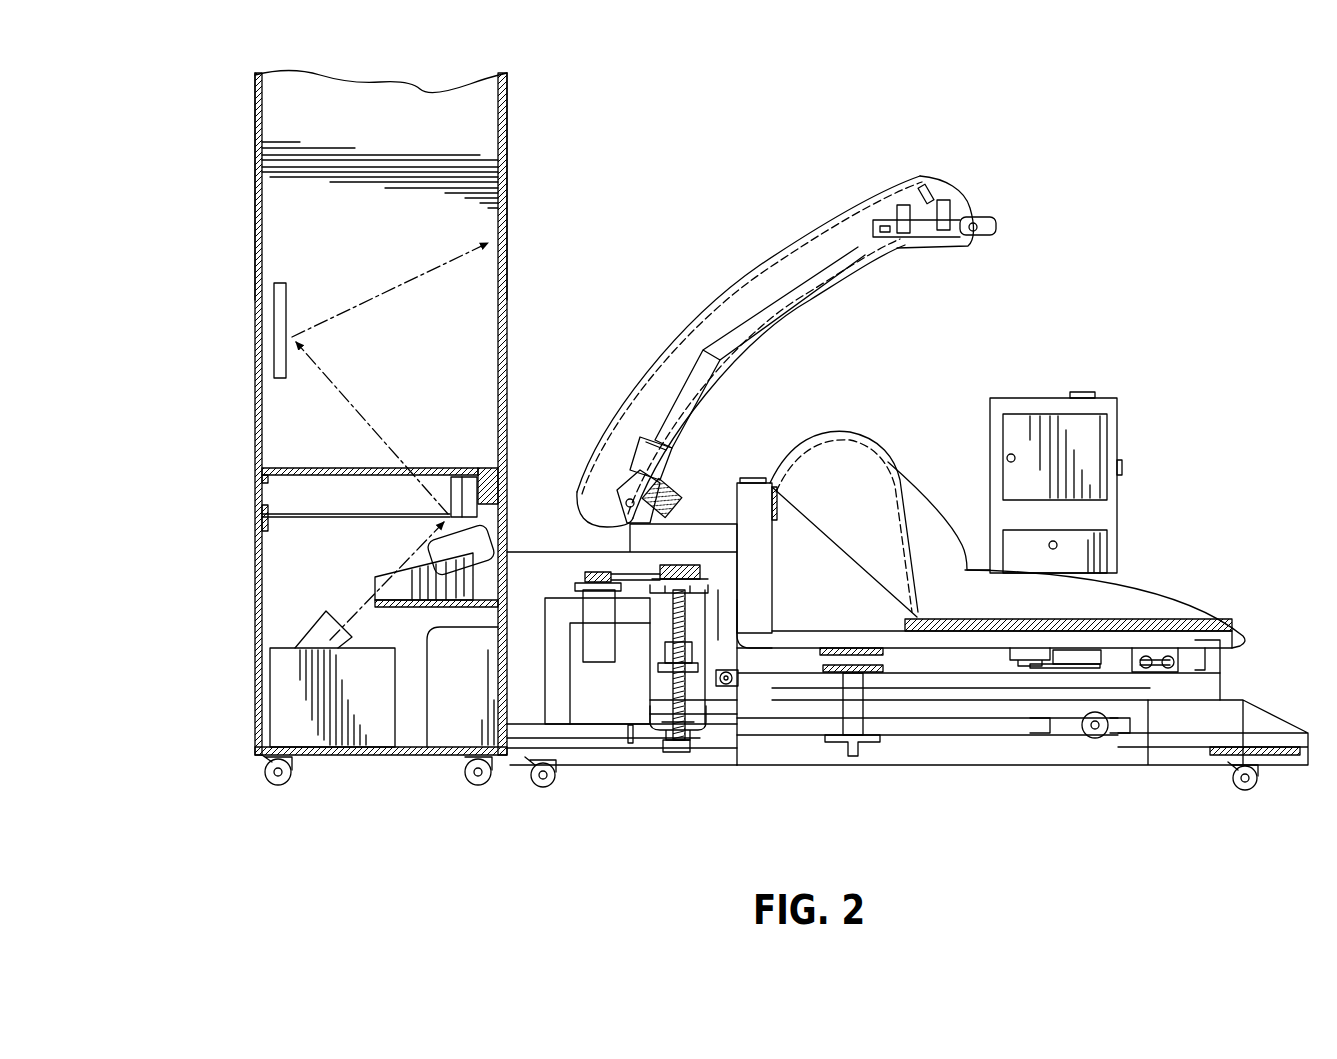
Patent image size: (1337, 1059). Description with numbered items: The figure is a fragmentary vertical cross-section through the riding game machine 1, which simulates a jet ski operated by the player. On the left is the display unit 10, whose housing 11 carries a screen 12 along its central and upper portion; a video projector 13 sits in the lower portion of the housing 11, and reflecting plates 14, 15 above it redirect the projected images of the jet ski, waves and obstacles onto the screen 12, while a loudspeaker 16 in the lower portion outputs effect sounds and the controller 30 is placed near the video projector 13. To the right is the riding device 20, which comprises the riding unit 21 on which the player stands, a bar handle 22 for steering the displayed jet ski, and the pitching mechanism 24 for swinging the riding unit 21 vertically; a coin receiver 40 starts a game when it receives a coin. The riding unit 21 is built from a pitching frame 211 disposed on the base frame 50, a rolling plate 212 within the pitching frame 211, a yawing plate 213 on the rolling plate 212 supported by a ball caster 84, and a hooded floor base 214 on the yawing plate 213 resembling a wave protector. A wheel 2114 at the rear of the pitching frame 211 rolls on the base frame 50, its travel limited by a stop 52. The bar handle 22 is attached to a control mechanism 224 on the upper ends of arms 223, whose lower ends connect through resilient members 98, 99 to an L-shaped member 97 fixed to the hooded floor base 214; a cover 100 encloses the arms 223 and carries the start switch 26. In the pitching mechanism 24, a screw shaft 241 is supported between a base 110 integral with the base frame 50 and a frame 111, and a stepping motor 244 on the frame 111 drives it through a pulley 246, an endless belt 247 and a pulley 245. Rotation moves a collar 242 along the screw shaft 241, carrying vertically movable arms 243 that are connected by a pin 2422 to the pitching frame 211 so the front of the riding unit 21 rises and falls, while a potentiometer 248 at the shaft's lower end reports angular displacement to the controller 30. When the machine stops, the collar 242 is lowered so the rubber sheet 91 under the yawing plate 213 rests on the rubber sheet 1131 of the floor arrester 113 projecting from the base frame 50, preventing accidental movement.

The riding game machine 1 is at (765, 138).
The display unit 10 is at (518, 195).
The housing 11 is at (255, 118).
The screen 12 is at (507, 128).
The video projector 13 is at (335, 725).
The reflecting plate 14 is at (450, 487).
The reflecting plate 15 is at (287, 297).
The loudspeaker 16 is at (488, 548).
The riding device 20 is at (846, 416).
The riding unit 21 is at (1186, 610).
The bar handle 22 is at (983, 213).
The pitching mechanism 24 is at (563, 542).
The start switch 26 is at (933, 182).
The controller 30 is at (445, 725).
The coin receiver 40 is at (1118, 428).
The base frame 50 is at (993, 755).
The stop 52 is at (1115, 740).
The ball caster 84 is at (1030, 646).
The rubber sheet 91 is at (900, 650).
The L-shaped member 97 is at (720, 455).
The resilient member 98 is at (703, 445).
The resilient member 99 is at (674, 495).
The cover 100 is at (880, 180).
The base 110 is at (588, 750).
The frame 111 is at (560, 615).
The floor arrester 113 is at (866, 730).
The pitching frame 211 is at (980, 683).
The rolling plate 212 is at (1090, 655).
The yawing plate 213 is at (1205, 642).
The hooded floor base 214 is at (1145, 600).
The arm 223 is at (800, 290).
The control mechanism 224 is at (935, 240).
The screw shaft 241 is at (700, 610).
The collar 242 is at (690, 652).
The vertically movable arm 243 is at (708, 690).
The stepping motor 244 is at (603, 660).
The pulley 245 is at (742, 564).
The pulley 246 is at (590, 573).
The endless belt 247 is at (640, 568).
The potentiometer 248 is at (674, 753).
The rubber sheet 1131 is at (883, 670).
The wheel 2114 is at (1095, 740).
The pin 2422 is at (745, 690).